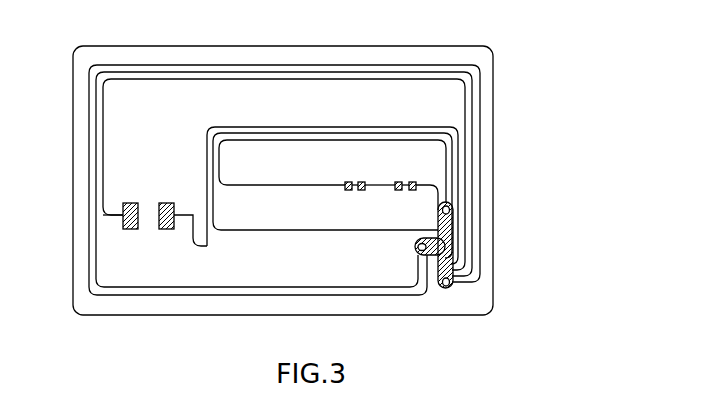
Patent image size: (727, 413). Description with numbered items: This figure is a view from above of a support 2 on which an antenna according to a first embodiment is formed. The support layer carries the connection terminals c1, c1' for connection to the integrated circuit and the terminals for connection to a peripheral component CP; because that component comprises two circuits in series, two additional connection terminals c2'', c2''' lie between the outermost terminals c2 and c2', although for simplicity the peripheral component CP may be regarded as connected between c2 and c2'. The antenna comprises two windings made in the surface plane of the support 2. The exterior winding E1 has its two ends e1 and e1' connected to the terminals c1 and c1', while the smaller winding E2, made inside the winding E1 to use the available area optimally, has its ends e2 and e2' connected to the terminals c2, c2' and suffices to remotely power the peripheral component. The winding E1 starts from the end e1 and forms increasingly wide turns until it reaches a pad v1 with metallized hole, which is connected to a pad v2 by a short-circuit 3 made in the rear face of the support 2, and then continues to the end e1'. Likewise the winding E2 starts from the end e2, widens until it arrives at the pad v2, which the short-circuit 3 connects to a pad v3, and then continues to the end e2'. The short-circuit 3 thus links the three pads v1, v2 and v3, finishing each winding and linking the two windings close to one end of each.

The support 2 is at (493, 50).
The short-circuit 3 is at (441, 290).
The winding E1 is at (213, 72).
The winding E2 is at (424, 130).
The end e1 is at (115, 243).
The end e1' is at (190, 243).
The end e2 is at (286, 205).
The end e2' is at (424, 203).
The connection terminal c1 is at (128, 194).
The connection terminal c1' is at (165, 194).
The connection terminal c2 is at (328, 174).
The connection terminal c2' is at (426, 171).
The additional connection terminal c2'' is at (346, 203).
The additional connection terminal c2''' is at (387, 203).
The peripheral component CP is at (407, 176).
The pad with metallized hole v1 is at (449, 283).
The pad with metallized hole v2 is at (418, 247).
The pad with metallized hole v3 is at (450, 210).